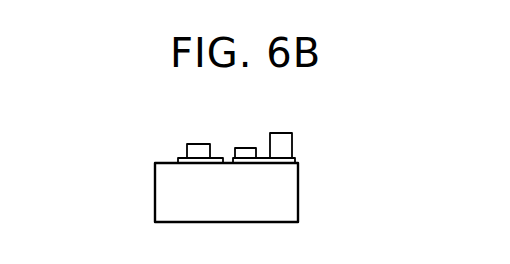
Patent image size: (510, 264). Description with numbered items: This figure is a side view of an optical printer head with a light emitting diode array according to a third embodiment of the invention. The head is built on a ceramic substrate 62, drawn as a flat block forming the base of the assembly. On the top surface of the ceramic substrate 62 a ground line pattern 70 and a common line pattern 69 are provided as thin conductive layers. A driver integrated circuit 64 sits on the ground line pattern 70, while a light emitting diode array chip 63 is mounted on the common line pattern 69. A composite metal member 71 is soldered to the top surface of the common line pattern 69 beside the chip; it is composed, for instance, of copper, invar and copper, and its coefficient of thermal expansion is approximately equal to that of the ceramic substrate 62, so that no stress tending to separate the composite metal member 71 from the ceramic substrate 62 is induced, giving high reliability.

The ceramic substrate 62 is at (197, 223).
The ground line pattern 70 is at (178, 160).
The common line pattern 69 is at (296, 159).
The driver integrated circuit 64 is at (200, 144).
The light emitting diode array chip 63 is at (248, 148).
The composite metal member 71 is at (285, 133).